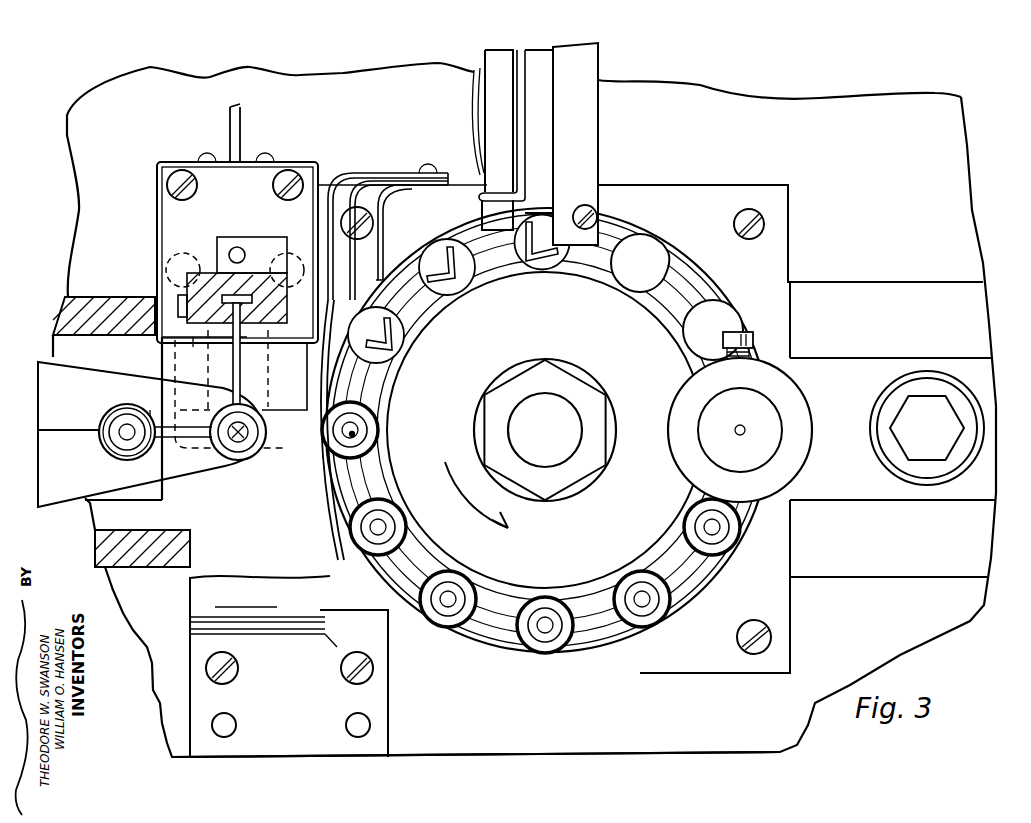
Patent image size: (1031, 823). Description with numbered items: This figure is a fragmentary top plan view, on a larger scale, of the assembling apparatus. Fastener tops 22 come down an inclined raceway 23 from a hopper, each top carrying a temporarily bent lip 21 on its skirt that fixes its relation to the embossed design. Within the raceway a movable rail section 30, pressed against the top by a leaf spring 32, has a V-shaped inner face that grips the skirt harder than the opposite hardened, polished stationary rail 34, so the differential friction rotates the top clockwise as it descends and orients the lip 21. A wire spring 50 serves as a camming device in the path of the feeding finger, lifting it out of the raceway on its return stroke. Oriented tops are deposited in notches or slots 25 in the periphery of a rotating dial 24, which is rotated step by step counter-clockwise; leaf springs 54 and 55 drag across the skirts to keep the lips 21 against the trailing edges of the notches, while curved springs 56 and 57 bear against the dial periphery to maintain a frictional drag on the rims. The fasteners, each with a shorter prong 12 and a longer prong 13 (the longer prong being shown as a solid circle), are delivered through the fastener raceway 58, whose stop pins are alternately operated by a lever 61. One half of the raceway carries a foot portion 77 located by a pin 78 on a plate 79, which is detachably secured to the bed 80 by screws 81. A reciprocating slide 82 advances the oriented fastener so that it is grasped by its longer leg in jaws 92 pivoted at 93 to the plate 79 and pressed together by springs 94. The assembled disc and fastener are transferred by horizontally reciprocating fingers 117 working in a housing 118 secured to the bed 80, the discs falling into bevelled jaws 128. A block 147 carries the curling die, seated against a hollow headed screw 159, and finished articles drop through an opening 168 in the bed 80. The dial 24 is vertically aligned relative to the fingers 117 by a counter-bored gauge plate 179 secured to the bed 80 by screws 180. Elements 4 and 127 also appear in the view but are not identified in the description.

The roller 4 is at (128, 450).
The prong 12 is at (352, 430).
The prong 13 is at (355, 440).
The lip 21 is at (432, 274).
The tops 22 is at (466, 272).
The raceway 23 is at (545, 86).
The rotating dial 24 is at (492, 634).
The notches or slots 25 is at (636, 242).
The movable rail section 30 is at (488, 58).
The leaf spring 32 is at (478, 118).
The stationary rail 34 is at (588, 138).
The wire spring 50 is at (525, 143).
The leaf spring 54 is at (392, 182).
The leaf spring 55 is at (362, 178).
The spring 56 is at (338, 170).
The spring 57 is at (336, 506).
The fastener raceway 58 is at (285, 315).
The lever 61 is at (195, 337).
The foot portion 77 is at (275, 240).
The pin 78 is at (240, 248).
The plate 79 is at (283, 172).
The bed 80 is at (487, 757).
The screws 81 is at (177, 172).
The reciprocating slide 82 is at (238, 100).
The jaws 92 is at (207, 450).
The pivot 93 is at (183, 250).
The springs 94 is at (157, 200).
The reciprocating fingers 117 is at (65, 490).
The housing 118 is at (185, 553).
The link 127 is at (205, 420).
The bevelled jaws 128 is at (160, 410).
The block 147 is at (875, 362).
The hollow headed screw 159 is at (806, 420).
The opening 168 is at (735, 306).
The gauge plate 179 is at (695, 668).
The screws 180 is at (758, 660).